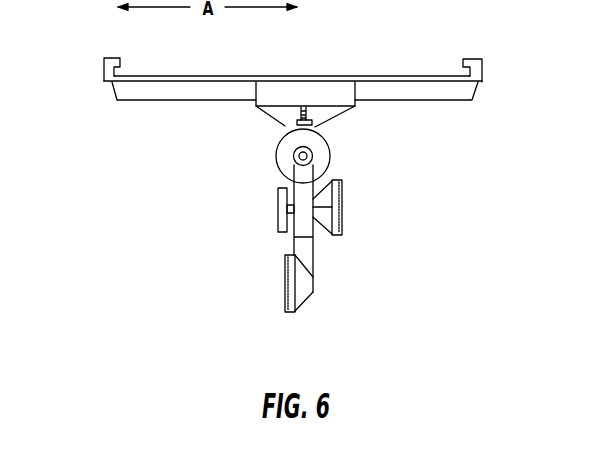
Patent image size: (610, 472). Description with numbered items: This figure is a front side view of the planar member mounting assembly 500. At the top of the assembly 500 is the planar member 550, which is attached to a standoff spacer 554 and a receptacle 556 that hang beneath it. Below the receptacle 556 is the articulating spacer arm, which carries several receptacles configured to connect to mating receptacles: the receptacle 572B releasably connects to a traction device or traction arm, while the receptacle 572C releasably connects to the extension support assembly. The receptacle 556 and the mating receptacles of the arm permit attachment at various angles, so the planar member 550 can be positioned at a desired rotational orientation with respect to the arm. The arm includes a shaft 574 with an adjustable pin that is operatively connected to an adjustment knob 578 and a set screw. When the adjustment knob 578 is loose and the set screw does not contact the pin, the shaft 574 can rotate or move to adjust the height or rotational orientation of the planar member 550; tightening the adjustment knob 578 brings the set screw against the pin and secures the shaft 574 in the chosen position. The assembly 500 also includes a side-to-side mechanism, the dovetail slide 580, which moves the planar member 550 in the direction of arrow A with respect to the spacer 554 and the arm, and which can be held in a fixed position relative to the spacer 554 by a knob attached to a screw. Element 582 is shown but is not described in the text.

The planar member mounting assembly 500 is at (440, 185).
The planar member 550 is at (354, 82).
The standoff spacer 554 is at (350, 95).
The receptacle 556 is at (330, 153).
The receptacle 572B is at (342, 208).
The receptacle 572C is at (302, 293).
The shaft 574 is at (310, 252).
The adjustment knob 578 is at (278, 205).
The dovetail slide 580 is at (474, 92).
The bracket 582 is at (291, 125).